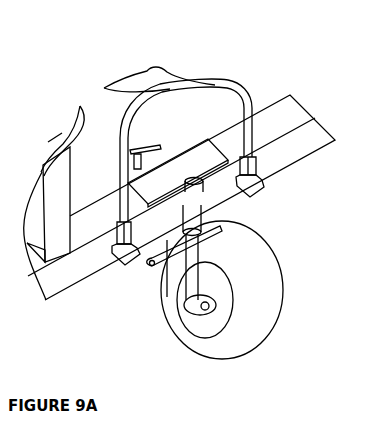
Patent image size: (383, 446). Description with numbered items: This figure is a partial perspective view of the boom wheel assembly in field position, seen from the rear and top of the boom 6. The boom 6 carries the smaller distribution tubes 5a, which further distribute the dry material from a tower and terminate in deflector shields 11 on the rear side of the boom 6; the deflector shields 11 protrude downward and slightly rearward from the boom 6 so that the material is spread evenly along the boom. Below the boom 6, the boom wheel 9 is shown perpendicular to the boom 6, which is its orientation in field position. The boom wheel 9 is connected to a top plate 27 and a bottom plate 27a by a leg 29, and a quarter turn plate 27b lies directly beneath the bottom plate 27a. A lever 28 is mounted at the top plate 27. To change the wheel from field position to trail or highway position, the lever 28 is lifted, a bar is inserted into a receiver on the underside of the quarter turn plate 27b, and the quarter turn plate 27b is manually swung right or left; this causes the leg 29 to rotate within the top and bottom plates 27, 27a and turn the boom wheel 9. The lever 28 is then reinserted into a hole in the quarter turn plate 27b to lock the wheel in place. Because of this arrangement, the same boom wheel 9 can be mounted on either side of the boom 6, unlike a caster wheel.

The boom 6 is at (278, 118).
The smaller distribution tubes 5a is at (147, 72).
The deflector shields 11 is at (260, 190).
The top plate 27 is at (165, 170).
The bottom plate 27a is at (182, 235).
The quarter turn plate 27b is at (158, 248).
The lever 28 is at (131, 150).
The leg 29 is at (195, 217).
The boom wheel 9 is at (238, 342).